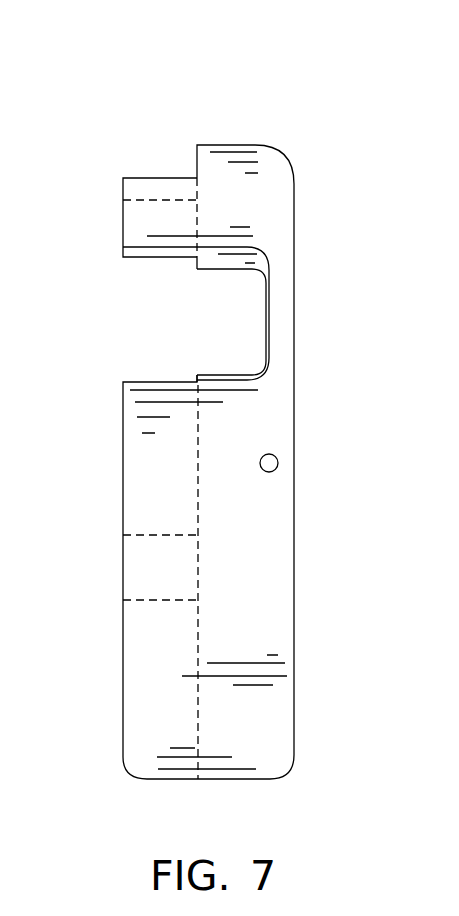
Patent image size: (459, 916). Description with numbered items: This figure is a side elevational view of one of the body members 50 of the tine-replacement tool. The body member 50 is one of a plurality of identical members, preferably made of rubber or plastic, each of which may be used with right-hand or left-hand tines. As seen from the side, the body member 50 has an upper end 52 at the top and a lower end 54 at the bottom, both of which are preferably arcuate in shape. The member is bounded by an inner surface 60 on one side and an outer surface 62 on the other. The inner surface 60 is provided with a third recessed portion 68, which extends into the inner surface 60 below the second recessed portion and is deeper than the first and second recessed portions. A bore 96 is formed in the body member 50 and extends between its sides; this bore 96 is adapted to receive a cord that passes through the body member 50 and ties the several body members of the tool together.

The body member 50 is at (180, 437).
The upper end 52 is at (241, 130).
The lower end 54 is at (193, 790).
The inner surface 60 is at (123, 492).
The outer surface 62 is at (295, 518).
The third recessed portion 68 is at (257, 310).
The bore 96 is at (274, 461).